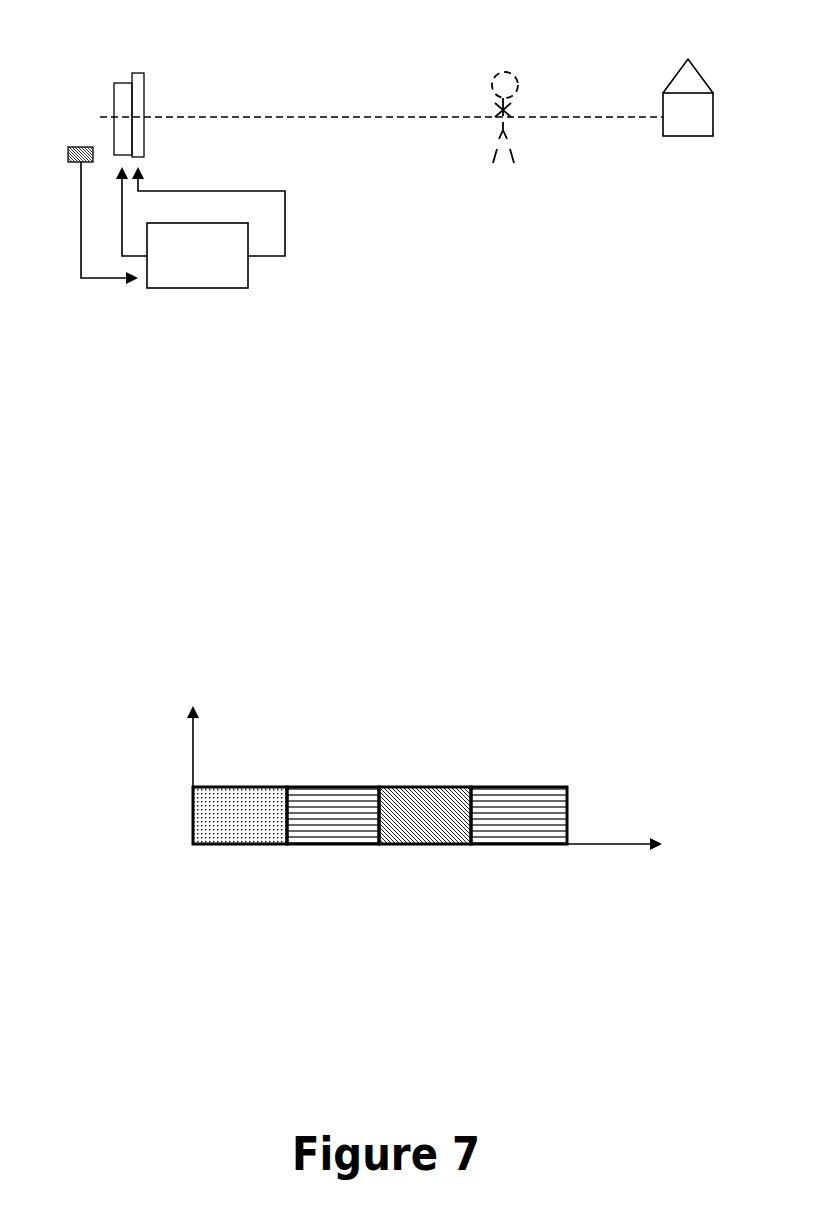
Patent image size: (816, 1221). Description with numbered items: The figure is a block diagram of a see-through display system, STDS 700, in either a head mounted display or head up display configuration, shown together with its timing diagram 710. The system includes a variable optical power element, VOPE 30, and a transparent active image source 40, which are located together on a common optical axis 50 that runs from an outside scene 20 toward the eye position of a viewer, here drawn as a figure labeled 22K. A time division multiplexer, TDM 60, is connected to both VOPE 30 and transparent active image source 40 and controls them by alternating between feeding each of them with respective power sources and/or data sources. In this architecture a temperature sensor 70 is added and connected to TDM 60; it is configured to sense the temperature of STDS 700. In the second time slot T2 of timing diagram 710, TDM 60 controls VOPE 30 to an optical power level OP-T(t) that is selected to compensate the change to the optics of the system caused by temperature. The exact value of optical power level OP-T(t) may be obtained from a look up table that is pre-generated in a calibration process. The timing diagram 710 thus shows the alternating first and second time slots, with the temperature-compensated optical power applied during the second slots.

The outside scene 20 is at (672, 82).
The person / intruder 22K is at (497, 100).
The variable optical power element 30 is at (113, 100).
The transparent active image source 40 is at (145, 85).
The common optical axis 50 is at (387, 117).
The time division multiplexer 60 is at (195, 288).
The temperature sensor 70 is at (67, 152).
The see-through display system 700 is at (482, 223).
The timing diagram 710 is at (372, 755).